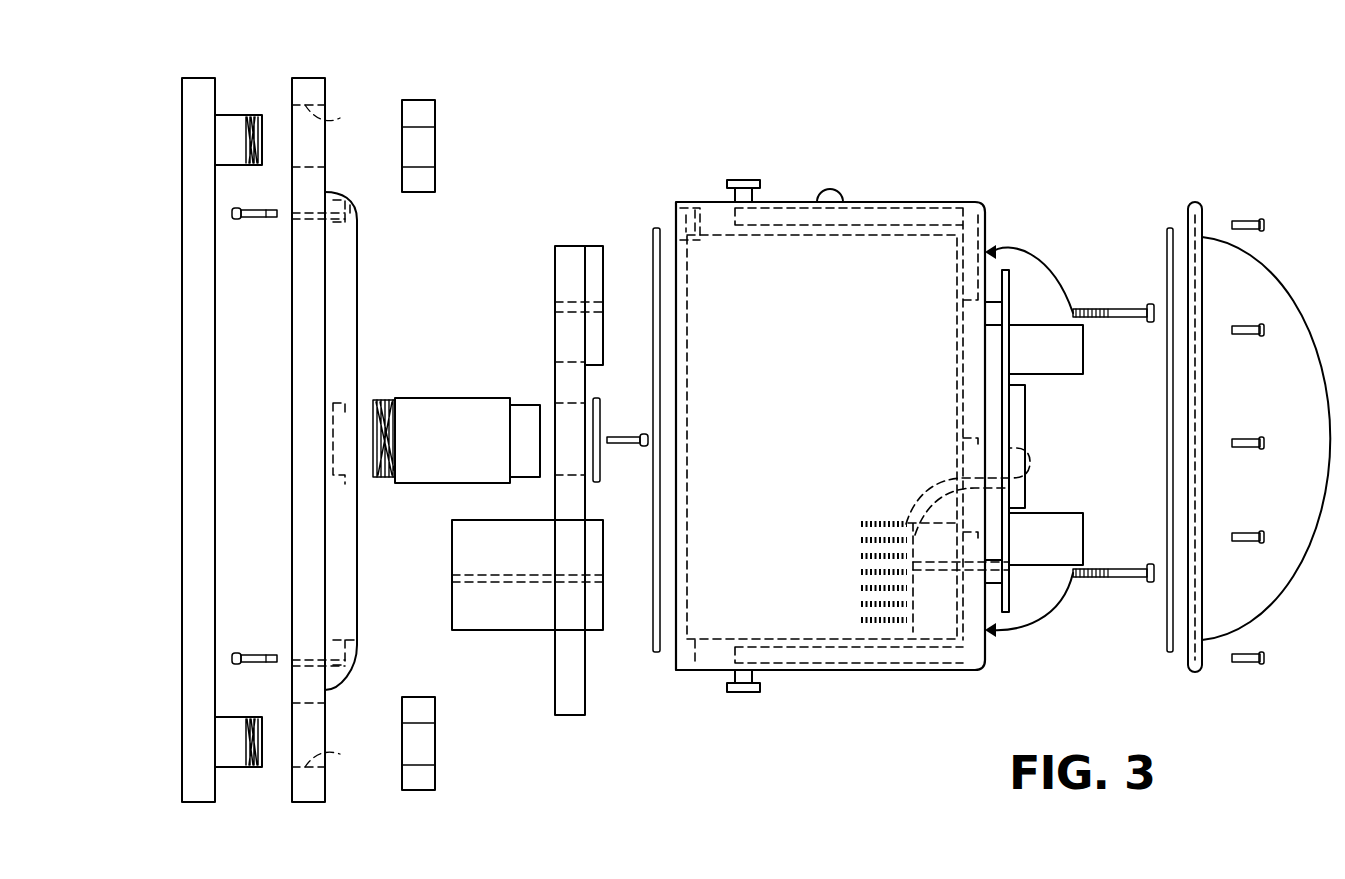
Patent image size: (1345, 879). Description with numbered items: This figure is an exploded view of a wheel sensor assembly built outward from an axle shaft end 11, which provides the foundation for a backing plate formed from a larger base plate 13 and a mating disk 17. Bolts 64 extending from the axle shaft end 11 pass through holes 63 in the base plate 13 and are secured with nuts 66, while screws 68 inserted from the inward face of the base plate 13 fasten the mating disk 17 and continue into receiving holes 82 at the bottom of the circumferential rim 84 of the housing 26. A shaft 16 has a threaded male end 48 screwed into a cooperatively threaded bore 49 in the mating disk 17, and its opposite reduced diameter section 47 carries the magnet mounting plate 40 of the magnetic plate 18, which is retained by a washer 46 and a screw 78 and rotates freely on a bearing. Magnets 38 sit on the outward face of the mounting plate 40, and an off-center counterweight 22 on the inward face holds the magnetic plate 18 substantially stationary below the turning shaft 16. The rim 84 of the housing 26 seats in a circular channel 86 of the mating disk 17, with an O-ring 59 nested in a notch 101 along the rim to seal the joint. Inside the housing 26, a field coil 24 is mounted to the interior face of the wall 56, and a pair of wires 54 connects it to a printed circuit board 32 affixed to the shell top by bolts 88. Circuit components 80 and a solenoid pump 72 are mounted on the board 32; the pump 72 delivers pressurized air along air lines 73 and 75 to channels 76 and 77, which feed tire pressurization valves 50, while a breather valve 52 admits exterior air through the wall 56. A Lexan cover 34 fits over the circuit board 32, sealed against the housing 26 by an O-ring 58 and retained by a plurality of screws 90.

The axle shaft end 11 is at (215, 323).
The base plate 13 is at (312, 78).
The shaft 16 is at (438, 413).
The mating disk 17 is at (357, 582).
The magnetic plate 18 is at (574, 246).
The counterweight 22 is at (452, 628).
The field coil 24 is at (878, 524).
The housing 26 is at (943, 670).
The printed circuit board 32 is at (1008, 292).
The cover 34 is at (1266, 288).
The magnet 38 is at (600, 246).
The magnet mounting plate 40 is at (566, 626).
The washer 46 is at (600, 400).
The reduced diameter section 47 is at (524, 405).
The threaded male end 48 is at (385, 477).
The threaded receiving bore 49 is at (345, 412).
The tire pressurization valve 50 is at (750, 182).
The breather valve 52 is at (834, 200).
The pair of wires 54 is at (925, 488).
The wall 56 is at (957, 385).
The O-ring 58 is at (1170, 648).
The O-ring 59 is at (655, 228).
The holes 63 is at (340, 118).
The bolts 64 is at (237, 115).
The nuts 66 is at (435, 192).
The screws 68 is at (255, 218).
The solenoid pump 72 is at (1083, 374).
The air line 73 is at (1045, 262).
The air line 75 is at (1050, 626).
The channel 76 is at (915, 225).
The channel 77 is at (860, 663).
The screw 78 is at (622, 443).
The circuit components 80 is at (1055, 449).
The receiving holes 82 is at (695, 210).
The rim 84 is at (676, 670).
The circular channel 86 is at (352, 222).
The bolts 88 is at (1113, 309).
The screws 90 is at (1250, 447).
The notch 101 is at (675, 240).